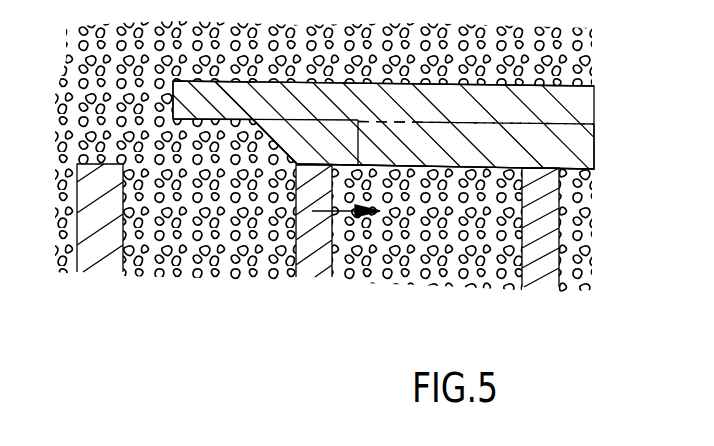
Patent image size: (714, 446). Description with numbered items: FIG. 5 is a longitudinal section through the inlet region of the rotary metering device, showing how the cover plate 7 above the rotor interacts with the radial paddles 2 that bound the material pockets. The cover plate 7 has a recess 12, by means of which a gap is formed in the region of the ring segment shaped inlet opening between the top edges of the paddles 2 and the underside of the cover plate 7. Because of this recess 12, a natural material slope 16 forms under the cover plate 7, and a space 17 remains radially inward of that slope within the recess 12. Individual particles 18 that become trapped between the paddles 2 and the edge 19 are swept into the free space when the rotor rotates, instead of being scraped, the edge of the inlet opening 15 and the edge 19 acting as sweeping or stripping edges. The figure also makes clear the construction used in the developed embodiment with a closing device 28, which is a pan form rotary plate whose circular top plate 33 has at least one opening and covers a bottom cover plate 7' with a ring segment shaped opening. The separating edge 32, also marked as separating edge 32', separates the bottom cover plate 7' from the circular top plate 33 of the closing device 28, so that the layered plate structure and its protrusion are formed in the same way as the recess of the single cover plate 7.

The radial paddles 2 is at (93, 269).
The cover plate 7 is at (476, 70).
The bottom cover plate 7' is at (440, 145).
The recess 12 is at (315, 128).
The edge of the inlet opening 15 is at (173, 91).
The material slope 16 is at (244, 108).
The space 17 is at (235, 138).
The individual particles 18 is at (362, 142).
The edge 19 is at (370, 148).
The closing device 28 is at (598, 88).
The circular top plate 33 is at (598, 124).
The separating edge 32 is at (433, 131).
The separating edge 32' is at (507, 141).